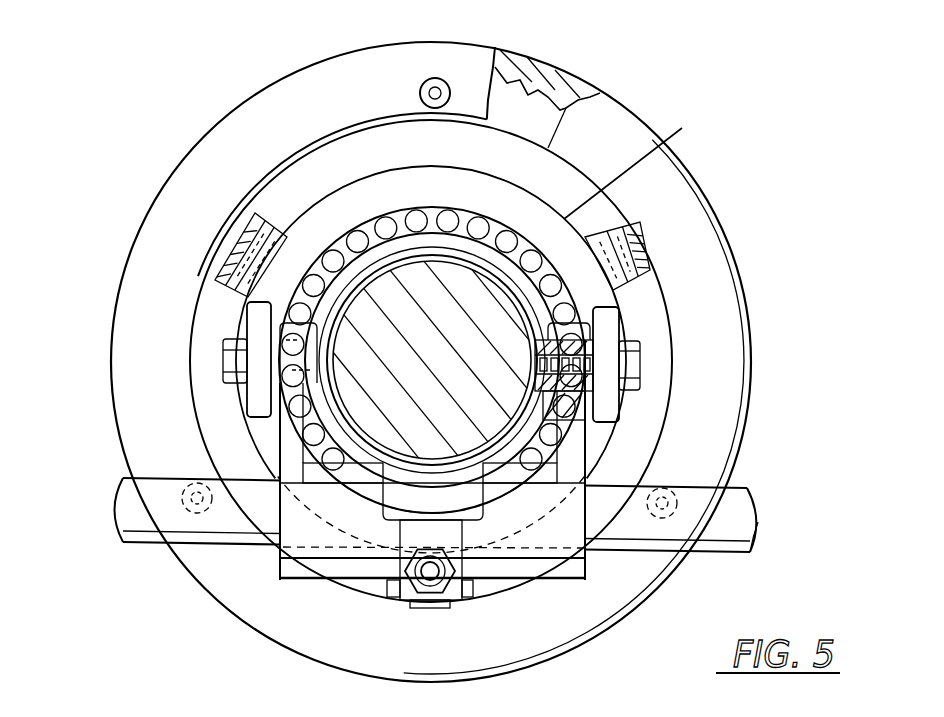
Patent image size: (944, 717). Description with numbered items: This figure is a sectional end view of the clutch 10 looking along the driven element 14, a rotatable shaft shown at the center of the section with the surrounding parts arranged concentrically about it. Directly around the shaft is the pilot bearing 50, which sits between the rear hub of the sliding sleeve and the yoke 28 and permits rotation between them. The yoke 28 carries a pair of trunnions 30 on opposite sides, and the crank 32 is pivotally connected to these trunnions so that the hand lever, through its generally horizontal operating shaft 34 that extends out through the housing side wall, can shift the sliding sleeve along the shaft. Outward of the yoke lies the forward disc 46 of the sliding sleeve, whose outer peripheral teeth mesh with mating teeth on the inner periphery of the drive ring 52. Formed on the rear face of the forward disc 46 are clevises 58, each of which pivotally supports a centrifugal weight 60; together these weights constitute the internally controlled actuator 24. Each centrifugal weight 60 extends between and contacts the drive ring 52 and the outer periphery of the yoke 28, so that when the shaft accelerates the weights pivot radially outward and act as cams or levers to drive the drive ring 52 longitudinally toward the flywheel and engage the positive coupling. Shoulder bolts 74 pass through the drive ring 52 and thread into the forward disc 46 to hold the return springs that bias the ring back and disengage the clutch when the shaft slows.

The clutch 10 is at (740, 157).
The driven element 14 is at (446, 337).
The internally controlled actuator 24 is at (660, 262).
The yoke 28 is at (622, 400).
The trunnions 30 is at (327, 371).
The crank 32 is at (587, 580).
The operating shaft 34 is at (742, 493).
The forward disc 46 is at (523, 100).
The pilot bearing 50 is at (395, 215).
The drive ring 52 is at (597, 83).
The clevises 58 is at (222, 283).
The centrifugal weight 60 is at (217, 238).
The shoulder bolts 74 is at (422, 84).